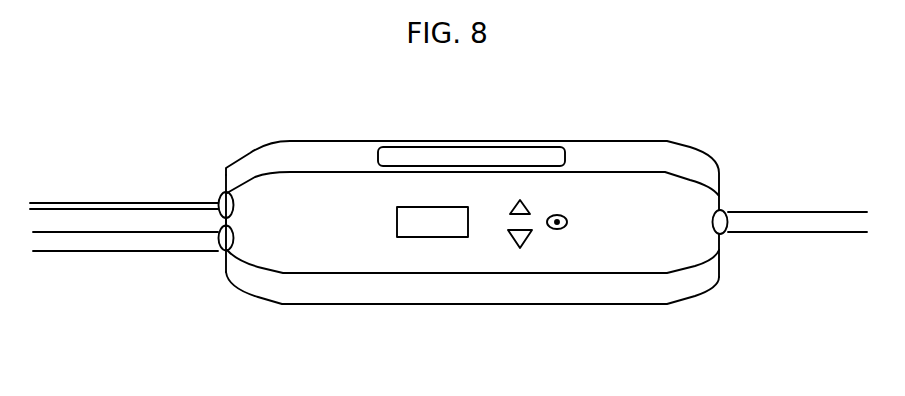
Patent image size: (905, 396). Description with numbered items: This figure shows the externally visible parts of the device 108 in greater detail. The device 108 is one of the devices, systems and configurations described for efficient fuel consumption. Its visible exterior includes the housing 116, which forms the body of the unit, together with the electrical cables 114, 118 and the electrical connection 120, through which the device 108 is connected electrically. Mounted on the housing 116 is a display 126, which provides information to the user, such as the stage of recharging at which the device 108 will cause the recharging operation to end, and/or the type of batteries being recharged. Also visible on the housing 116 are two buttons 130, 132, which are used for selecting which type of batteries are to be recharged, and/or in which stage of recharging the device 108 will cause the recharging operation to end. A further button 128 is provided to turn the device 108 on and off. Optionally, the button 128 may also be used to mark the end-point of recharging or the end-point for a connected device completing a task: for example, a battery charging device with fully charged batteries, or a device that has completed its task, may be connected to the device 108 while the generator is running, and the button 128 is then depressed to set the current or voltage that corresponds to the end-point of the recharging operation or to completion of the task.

The device 108 is at (668, 70).
The electrical cable 114 is at (808, 233).
The housing 116 is at (667, 305).
The electrical cable 118 is at (137, 252).
The electrical connection 120 is at (106, 203).
The display 126 is at (441, 238).
The button 128 is at (562, 229).
The button 130 is at (520, 199).
The button 132 is at (520, 249).